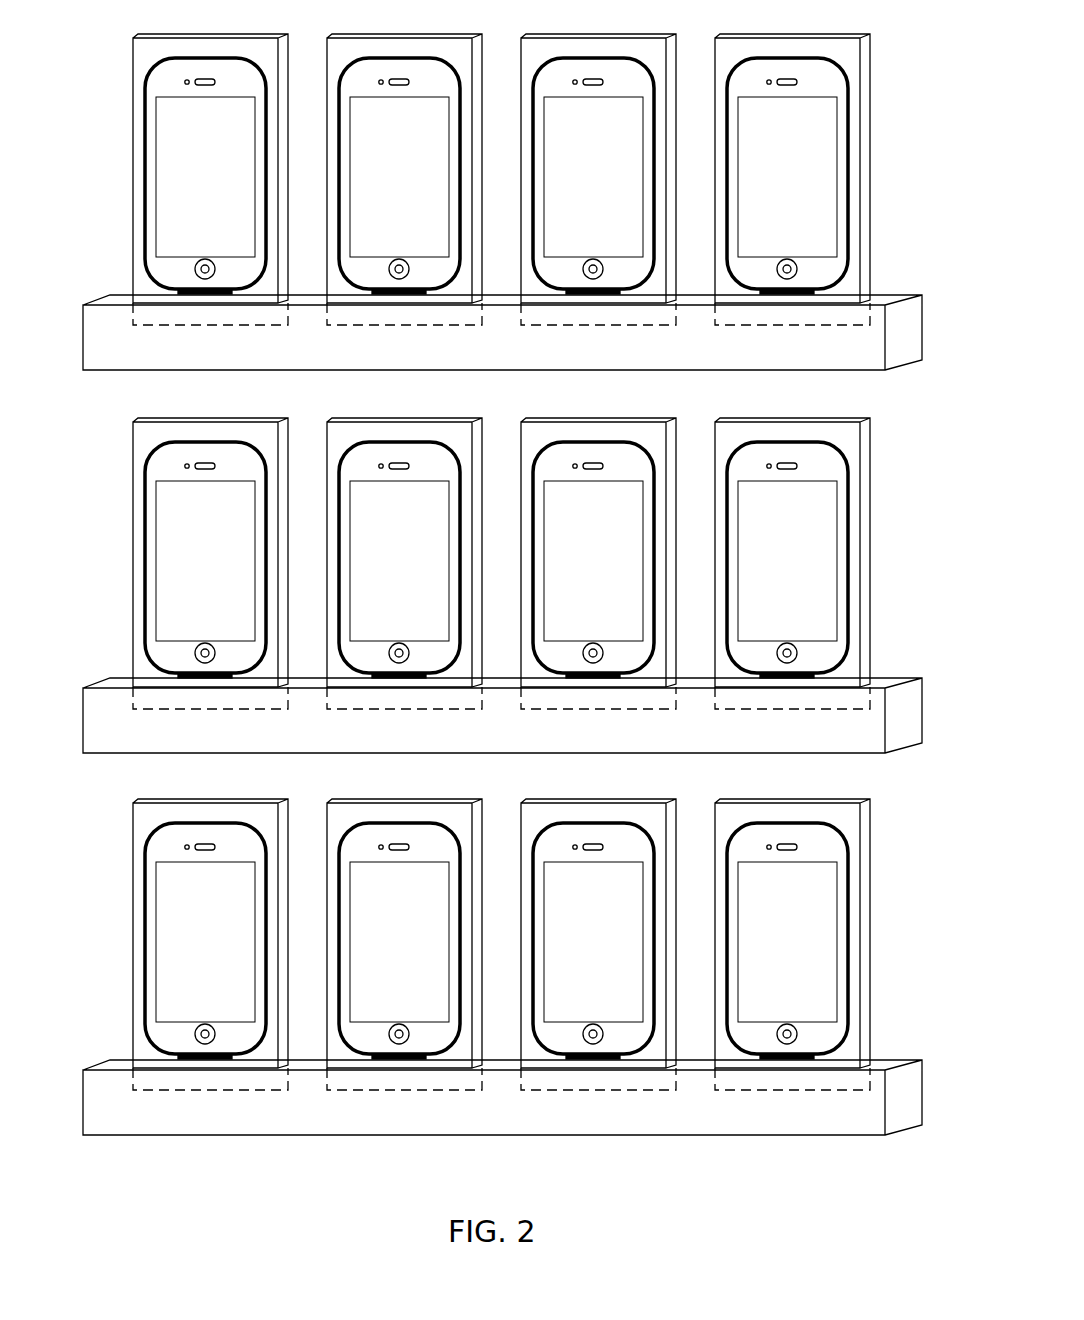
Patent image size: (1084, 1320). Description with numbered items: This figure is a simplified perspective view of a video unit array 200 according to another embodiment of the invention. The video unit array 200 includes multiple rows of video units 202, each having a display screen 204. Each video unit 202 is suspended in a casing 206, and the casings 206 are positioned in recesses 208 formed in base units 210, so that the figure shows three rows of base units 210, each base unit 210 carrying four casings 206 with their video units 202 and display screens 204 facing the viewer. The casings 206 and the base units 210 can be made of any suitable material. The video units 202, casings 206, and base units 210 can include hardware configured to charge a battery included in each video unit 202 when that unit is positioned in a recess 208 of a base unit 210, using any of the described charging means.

The video unit array 200 is at (850, 1189).
The video unit 202 is at (507, 533).
The display screen 204 is at (478, 612).
The casing 206 is at (501, 536).
The recess 208 is at (503, 714).
The base unit 210 is at (481, 757).